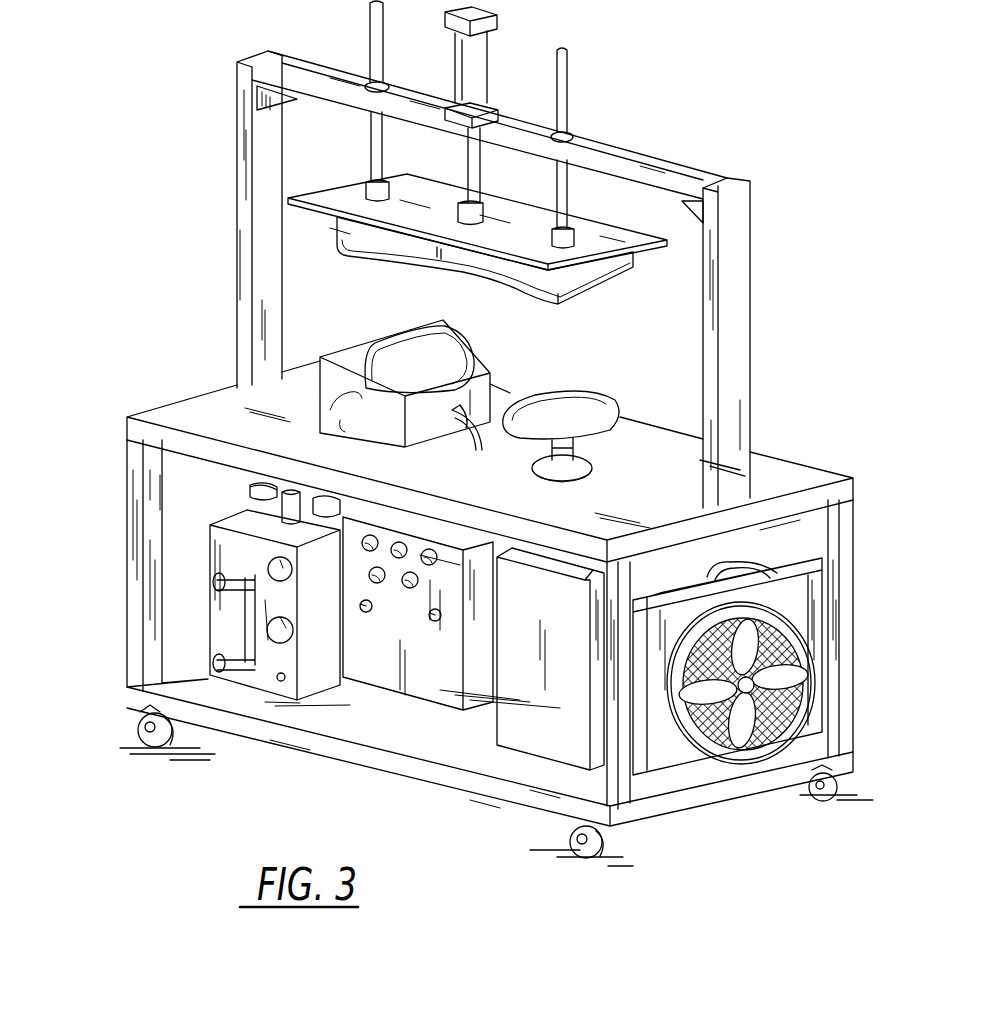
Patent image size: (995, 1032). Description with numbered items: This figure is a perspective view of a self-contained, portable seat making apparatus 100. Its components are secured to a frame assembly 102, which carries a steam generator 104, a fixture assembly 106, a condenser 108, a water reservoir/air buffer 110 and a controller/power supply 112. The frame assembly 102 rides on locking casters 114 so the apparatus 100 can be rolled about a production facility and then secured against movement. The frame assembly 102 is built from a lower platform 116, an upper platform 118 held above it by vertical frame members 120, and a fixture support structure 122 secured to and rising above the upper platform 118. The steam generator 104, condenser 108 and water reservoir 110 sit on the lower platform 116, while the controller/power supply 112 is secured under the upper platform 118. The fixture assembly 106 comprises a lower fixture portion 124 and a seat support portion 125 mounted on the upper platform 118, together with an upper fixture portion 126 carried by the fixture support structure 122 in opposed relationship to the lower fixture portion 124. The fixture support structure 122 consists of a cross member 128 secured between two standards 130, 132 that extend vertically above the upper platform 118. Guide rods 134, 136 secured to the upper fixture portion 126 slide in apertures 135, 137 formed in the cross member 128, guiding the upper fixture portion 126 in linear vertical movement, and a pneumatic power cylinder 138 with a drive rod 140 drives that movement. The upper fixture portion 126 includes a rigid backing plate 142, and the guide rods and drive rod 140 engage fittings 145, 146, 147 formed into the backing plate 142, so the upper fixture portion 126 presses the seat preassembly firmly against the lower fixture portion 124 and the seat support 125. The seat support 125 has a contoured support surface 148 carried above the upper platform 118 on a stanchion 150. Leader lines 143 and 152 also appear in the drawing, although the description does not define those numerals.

The seat making apparatus 100 is at (208, 277).
The frame assembly 102 is at (166, 402).
The steam generator 104 is at (268, 684).
The fixture assembly 106 is at (667, 300).
The condenser 108 is at (672, 763).
The water reservoir/air buffer 110 is at (520, 740).
The controller/power supply 112 is at (430, 687).
The locking casters 114 is at (133, 730).
The lower platform 116 is at (367, 762).
The upper platform 118 is at (805, 470).
The vertical frame members 120 is at (137, 597).
The fixture support structure 122 is at (509, 279).
The lower fixture portion 124 is at (478, 388).
The seat support portion 125 is at (597, 415).
The upper fixture portion 126 is at (568, 304).
The cross member 128 is at (697, 173).
The standard 130 is at (752, 287).
The standard 132 is at (242, 151).
The guide rod 134 is at (370, 117).
The aperture 135 is at (367, 85).
The guide rod 136 is at (572, 194).
The aperture 137 is at (573, 137).
The pneumatic power cylinder 138 is at (487, 38).
The drive rod 140 is at (478, 174).
The backing plate 142 is at (648, 242).
The tray rim 143 is at (463, 272).
The fitting 145 is at (578, 231).
The fitting 146 is at (458, 205).
The fitting 147 is at (365, 183).
The support surface 148 is at (588, 410).
The stanchion 150 is at (580, 447).
The cable 152 is at (360, 426).